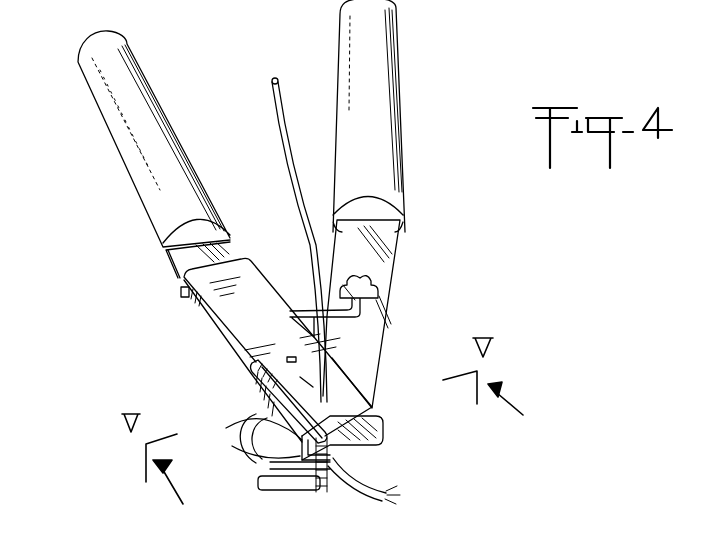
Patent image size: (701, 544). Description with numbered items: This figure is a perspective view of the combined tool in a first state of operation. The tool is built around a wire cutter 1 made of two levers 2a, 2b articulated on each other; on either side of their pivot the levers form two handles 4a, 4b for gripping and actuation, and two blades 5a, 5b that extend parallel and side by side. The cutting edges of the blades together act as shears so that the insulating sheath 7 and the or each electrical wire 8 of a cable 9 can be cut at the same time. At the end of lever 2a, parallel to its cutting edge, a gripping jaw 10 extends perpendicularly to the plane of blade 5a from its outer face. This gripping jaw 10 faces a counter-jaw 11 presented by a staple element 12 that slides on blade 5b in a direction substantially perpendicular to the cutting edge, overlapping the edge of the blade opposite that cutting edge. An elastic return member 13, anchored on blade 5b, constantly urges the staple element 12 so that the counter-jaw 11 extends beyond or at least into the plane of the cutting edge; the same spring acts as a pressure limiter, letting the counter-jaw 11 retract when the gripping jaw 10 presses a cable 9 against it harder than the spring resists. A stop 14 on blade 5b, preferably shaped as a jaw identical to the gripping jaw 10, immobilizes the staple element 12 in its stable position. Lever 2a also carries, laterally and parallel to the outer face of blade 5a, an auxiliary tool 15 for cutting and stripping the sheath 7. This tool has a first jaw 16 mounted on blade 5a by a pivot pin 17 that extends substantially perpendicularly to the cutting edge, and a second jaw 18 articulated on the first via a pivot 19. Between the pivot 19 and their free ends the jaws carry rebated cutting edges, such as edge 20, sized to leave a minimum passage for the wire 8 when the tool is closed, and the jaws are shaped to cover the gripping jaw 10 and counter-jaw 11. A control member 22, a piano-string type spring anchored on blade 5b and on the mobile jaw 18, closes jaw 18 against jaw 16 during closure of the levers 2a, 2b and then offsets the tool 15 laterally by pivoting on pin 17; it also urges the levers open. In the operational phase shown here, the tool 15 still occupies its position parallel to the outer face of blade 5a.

The wire cutter 1 is at (448, 71).
The lever 2a is at (131, 139).
The lever 2b is at (398, 116).
The handle 4a is at (108, 100).
The handle 4b is at (374, 48).
The blade 5a is at (180, 258).
The blade 5b is at (392, 241).
The insulating sheath 7 is at (378, 498).
The electrical wire 8 is at (396, 491).
The cable 9 is at (279, 116).
The gripping jaw 10 is at (372, 450).
The counter-jaw 11 is at (256, 450).
The staple element 12 is at (263, 488).
The elastic return member 13 is at (250, 434).
The stop 14 is at (313, 486).
The auxiliary tool 15 is at (286, 323).
The first jaw 16 is at (228, 302).
The pivot pin 17 is at (182, 292).
The second jaw 18 is at (255, 365).
The pivot 19 is at (291, 356).
The rebated cutting edge 20 is at (372, 407).
The control member 22 is at (308, 308).